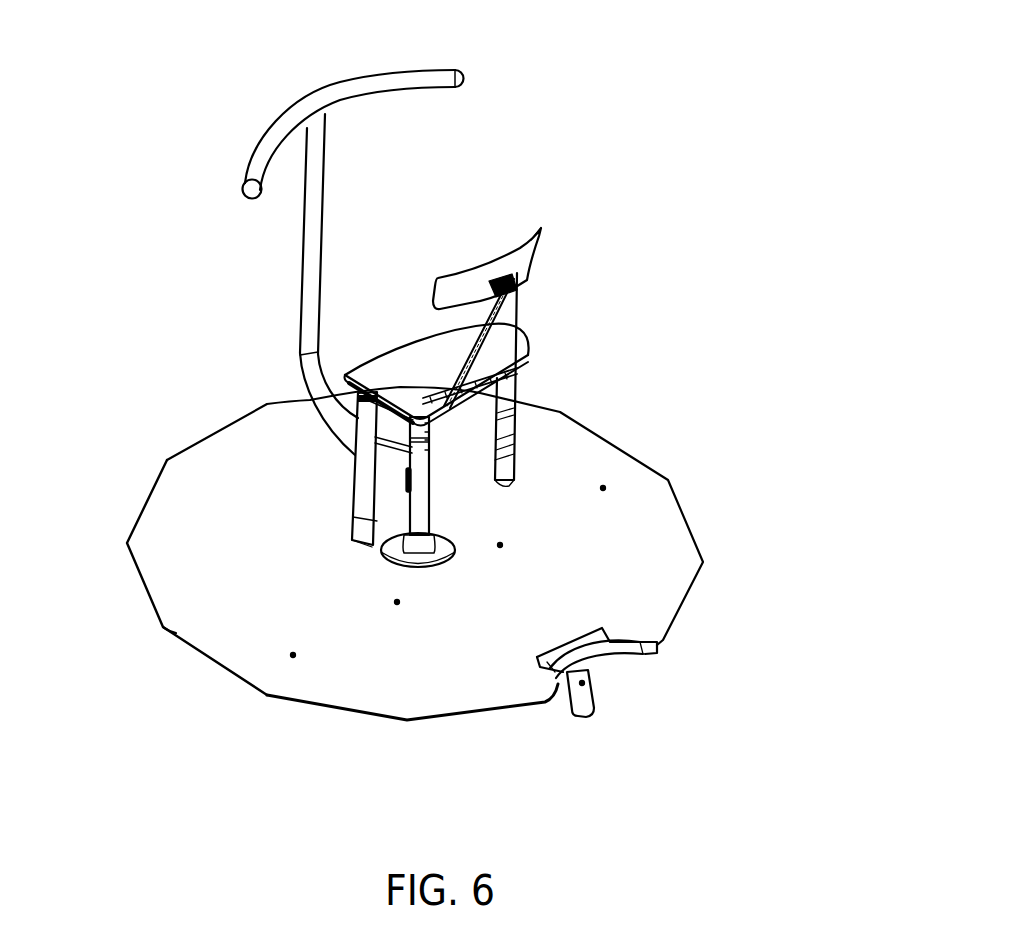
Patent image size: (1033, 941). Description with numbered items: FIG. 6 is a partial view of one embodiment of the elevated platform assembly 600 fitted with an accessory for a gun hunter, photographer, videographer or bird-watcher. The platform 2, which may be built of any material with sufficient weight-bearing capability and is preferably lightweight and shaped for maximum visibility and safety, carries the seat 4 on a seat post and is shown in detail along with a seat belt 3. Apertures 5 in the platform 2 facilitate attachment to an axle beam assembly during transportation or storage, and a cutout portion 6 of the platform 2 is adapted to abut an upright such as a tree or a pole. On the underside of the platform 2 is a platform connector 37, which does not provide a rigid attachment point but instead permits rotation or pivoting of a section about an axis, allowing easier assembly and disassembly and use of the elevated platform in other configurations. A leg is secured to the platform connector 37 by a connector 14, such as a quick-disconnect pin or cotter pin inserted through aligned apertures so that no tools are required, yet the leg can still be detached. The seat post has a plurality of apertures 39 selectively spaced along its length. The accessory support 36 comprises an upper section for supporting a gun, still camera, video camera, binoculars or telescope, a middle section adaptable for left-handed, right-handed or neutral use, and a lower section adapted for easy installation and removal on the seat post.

The exercise apparatus 600 is at (565, 164).
The platform 2 is at (288, 562).
The seat belt 3 is at (357, 517).
The seat 4 is at (412, 383).
The apertures 5 is at (603, 488).
The cutout portion 6 is at (603, 628).
The connector 14 is at (582, 683).
The accessory support 36 is at (310, 328).
The platform connector 37 is at (590, 715).
The apertures 39 is at (418, 514).